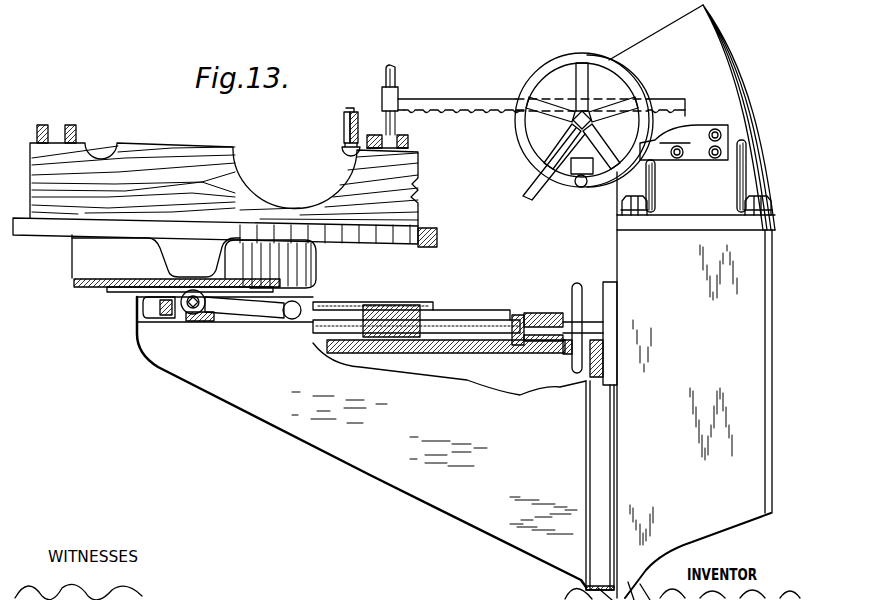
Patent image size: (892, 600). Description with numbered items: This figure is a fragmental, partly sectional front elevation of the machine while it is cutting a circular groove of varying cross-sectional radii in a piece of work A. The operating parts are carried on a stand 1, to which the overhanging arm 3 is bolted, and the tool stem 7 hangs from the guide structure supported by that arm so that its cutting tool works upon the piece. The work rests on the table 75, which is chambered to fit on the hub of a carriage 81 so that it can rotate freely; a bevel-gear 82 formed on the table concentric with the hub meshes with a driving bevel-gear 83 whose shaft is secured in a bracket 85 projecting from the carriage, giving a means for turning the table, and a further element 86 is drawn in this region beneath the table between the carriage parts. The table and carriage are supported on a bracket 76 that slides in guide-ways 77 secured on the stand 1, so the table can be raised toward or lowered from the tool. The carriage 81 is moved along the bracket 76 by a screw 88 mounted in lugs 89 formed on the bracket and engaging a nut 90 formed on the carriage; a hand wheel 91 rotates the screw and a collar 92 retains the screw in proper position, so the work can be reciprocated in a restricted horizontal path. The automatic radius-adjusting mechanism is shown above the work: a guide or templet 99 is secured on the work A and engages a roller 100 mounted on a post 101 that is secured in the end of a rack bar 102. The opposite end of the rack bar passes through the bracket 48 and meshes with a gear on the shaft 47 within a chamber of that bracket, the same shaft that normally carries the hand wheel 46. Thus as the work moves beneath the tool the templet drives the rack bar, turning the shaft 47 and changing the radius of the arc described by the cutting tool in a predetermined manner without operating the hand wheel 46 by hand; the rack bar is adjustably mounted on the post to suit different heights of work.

The stand 1 is at (696, 385).
The overhanging arm 3 is at (692, 117).
The tool stem 7 is at (343, 128).
The hand wheel 46 is at (520, 160).
The shaft 47 is at (548, 174).
The bracket 48 is at (663, 152).
The table 75 is at (177, 2).
The bracket 76 is at (388, 478).
The guide-ways 77 is at (618, 317).
The carriage 81 is at (357, 303).
The bevel-gear 82 is at (98, 284).
The driving bevel-gear 83 is at (227, 325).
The bracket 85 is at (177, 320).
The link bar 86 is at (283, 314).
The screw 88 is at (456, 321).
The lugs 89 is at (550, 310).
The nut 90 is at (400, 316).
The hand wheel 91 is at (578, 283).
The collar 92 is at (520, 310).
The guide or templet 99 is at (50, 124).
The roller 100 is at (409, 137).
The post 101 is at (397, 86).
The rack bar 102 is at (470, 106).
The work A is at (181, 158).